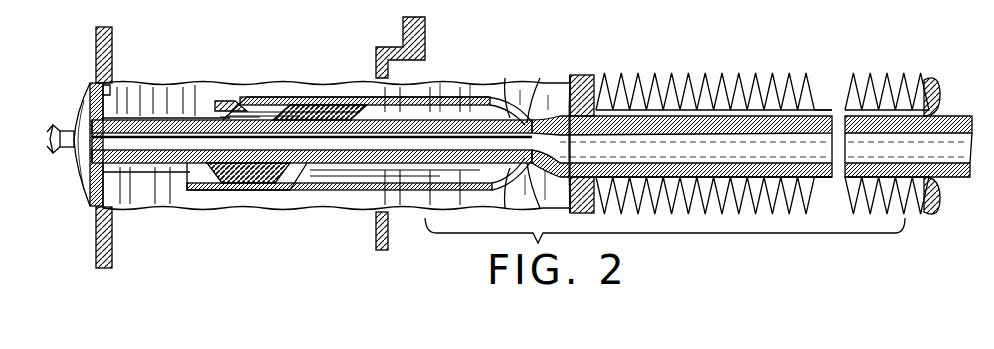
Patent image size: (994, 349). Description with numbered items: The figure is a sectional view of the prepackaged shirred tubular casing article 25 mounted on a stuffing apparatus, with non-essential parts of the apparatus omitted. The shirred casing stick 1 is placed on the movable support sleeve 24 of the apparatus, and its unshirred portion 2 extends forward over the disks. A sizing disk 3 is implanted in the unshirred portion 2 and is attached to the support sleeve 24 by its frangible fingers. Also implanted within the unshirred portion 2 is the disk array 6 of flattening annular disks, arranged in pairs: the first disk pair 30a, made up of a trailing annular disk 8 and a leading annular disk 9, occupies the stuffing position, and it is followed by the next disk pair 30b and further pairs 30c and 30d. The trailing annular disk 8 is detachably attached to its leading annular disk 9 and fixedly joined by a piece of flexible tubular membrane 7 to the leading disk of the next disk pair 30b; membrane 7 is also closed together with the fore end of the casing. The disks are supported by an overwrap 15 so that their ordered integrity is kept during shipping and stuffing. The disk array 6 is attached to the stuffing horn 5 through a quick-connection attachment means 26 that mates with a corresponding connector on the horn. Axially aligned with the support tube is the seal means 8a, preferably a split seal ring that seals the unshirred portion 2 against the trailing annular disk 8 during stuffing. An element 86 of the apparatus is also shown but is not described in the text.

The shirred casing stick 1 is at (780, 75).
The unshirred portion 2 is at (128, 208).
The sizing disk 3 is at (577, 78).
The stuffing horn 5 is at (325, 163).
The disk array 6 is at (215, 99).
The flexible tubular membrane 7 is at (178, 96).
The trailing annular disk 8 is at (106, 88).
The seal means 8a is at (113, 50).
The leading annular disk 9 is at (90, 100).
The overwrap 15 is at (348, 192).
The movable support sleeve 24 is at (604, 84).
The prepackaged shirred tubular casing article 25 is at (481, 78).
The quick-connection attachment means 26 is at (522, 130).
The first disk pair 30a is at (97, 74).
The next disk pair 30b is at (300, 97).
The hatched insert 30c is at (345, 97).
The lower laminate layer 30d is at (266, 192).
The mounting bracket 86 is at (402, 34).